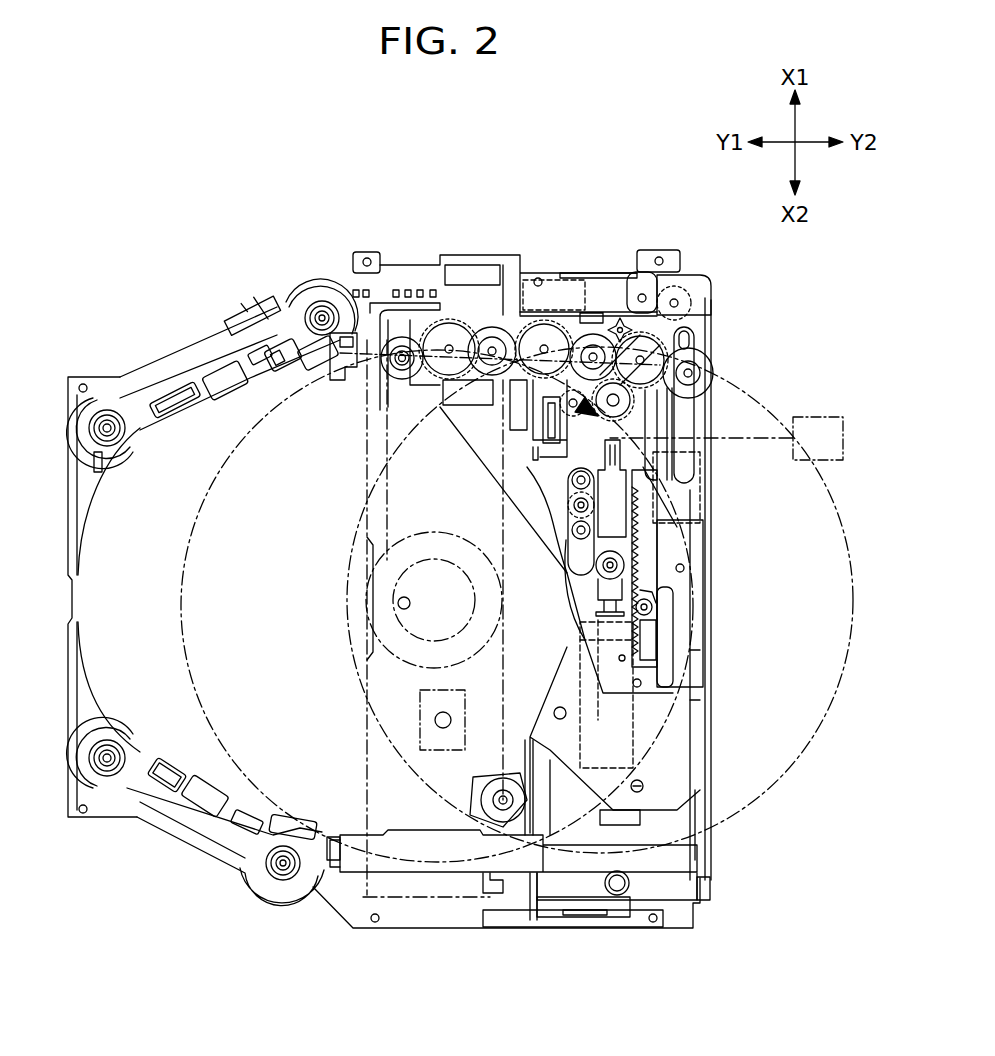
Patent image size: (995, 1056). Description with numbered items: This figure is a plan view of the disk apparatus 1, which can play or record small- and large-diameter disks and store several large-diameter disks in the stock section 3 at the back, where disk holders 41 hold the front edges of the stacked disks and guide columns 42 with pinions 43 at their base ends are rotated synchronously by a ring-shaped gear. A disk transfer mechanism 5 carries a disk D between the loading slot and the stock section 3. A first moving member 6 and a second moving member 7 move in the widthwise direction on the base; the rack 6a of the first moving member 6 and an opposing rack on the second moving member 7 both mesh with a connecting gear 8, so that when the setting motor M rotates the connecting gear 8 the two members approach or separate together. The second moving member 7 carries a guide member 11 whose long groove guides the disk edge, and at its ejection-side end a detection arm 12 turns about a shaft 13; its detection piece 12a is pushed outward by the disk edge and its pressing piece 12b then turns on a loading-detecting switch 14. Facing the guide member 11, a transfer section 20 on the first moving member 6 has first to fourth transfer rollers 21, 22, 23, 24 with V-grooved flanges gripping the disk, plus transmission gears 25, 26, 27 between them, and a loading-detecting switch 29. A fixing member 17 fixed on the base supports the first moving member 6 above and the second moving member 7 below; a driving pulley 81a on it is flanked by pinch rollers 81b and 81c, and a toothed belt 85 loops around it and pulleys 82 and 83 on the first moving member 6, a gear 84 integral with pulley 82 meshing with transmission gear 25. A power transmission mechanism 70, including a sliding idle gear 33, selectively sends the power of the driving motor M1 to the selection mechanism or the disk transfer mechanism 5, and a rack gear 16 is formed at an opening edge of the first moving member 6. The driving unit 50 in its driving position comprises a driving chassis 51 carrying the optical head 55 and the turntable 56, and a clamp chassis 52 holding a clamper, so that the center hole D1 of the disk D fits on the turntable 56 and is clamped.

The disk apparatus 1 is at (208, 292).
The stock section 3 is at (337, 965).
The disk transfer mechanism 5 is at (363, 433).
The first moving member 6 is at (667, 657).
The rack 6a is at (640, 641).
The second moving member 7 is at (663, 767).
The connecting gear 8 is at (652, 607).
The guide member 11 is at (418, 843).
The detection arm 12 is at (688, 890).
The detection piece 12a is at (700, 858).
The pressing piece 12b is at (537, 880).
The shaft 13 is at (616, 895).
The loading-detecting switch 14 is at (520, 864).
The rack gear 16 is at (540, 410).
The fixing member 17 is at (560, 505).
The transfer section 20 is at (605, 200).
The first transfer roller 21 is at (713, 373).
The second transfer roller 22 is at (592, 340).
The third transfer roller 23 is at (493, 345).
The fourth transfer roller 24 is at (401, 338).
The transmission gear 25 is at (660, 325).
The transmission gear 26 is at (543, 340).
The transmission gear 27 is at (450, 345).
The loading-detecting switch 29 is at (637, 332).
The idle gear 33 is at (553, 447).
The disk holders 41 is at (85, 495).
The guide columns 42 is at (322, 300).
The pinions 43 is at (293, 300).
The driving unit 50 is at (362, 693).
The driving chassis 51 is at (365, 782).
The clamp chassis 52 is at (380, 468).
The optical head 55 is at (420, 745).
The turntable 56 is at (388, 583).
The power transmission mechanism 70 is at (529, 459).
The driving pulley 81a is at (598, 568).
The pinch roller 81b is at (575, 535).
The pinch roller 81c is at (582, 640).
The pulley 82 is at (662, 413).
The pulley 83 is at (680, 548).
The gear 84 is at (628, 392).
The toothed belt 85 is at (652, 505).
The disk D is at (183, 623).
The center hole D1 is at (398, 603).
The setting motor M is at (578, 668).
The driving motor M1 is at (807, 453).